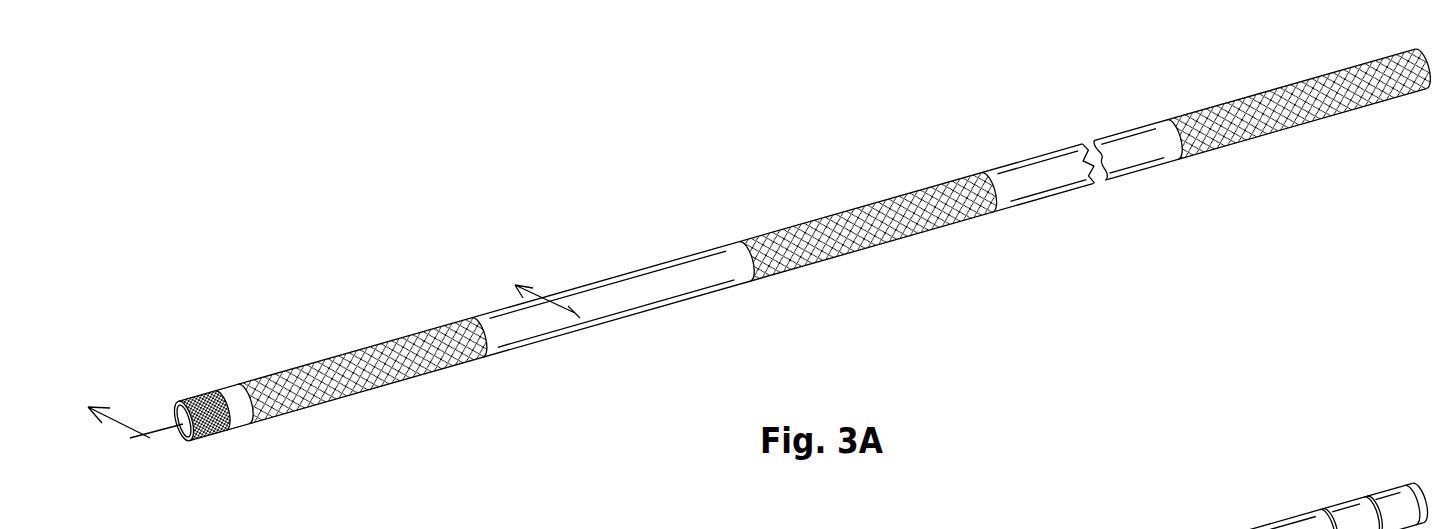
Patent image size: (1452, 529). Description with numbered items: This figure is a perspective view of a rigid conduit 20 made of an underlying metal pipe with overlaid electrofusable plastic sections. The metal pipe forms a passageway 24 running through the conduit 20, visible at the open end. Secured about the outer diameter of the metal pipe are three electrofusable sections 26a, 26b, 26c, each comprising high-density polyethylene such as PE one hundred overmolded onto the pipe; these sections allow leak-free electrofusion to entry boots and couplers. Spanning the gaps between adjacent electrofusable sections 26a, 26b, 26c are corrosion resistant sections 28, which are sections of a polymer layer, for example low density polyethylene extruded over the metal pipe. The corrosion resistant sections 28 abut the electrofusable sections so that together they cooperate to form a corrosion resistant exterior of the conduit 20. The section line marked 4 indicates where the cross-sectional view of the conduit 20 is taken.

The conduit 20 is at (729, 150).
The passageway 24 is at (175, 446).
The electrofusable section 26a is at (365, 393).
The electrofusable section 26b is at (870, 252).
The electrofusable section 26c is at (1305, 116).
The corrosion resistant section 28 is at (228, 388).
The section line 4- 4 is at (330, 349).